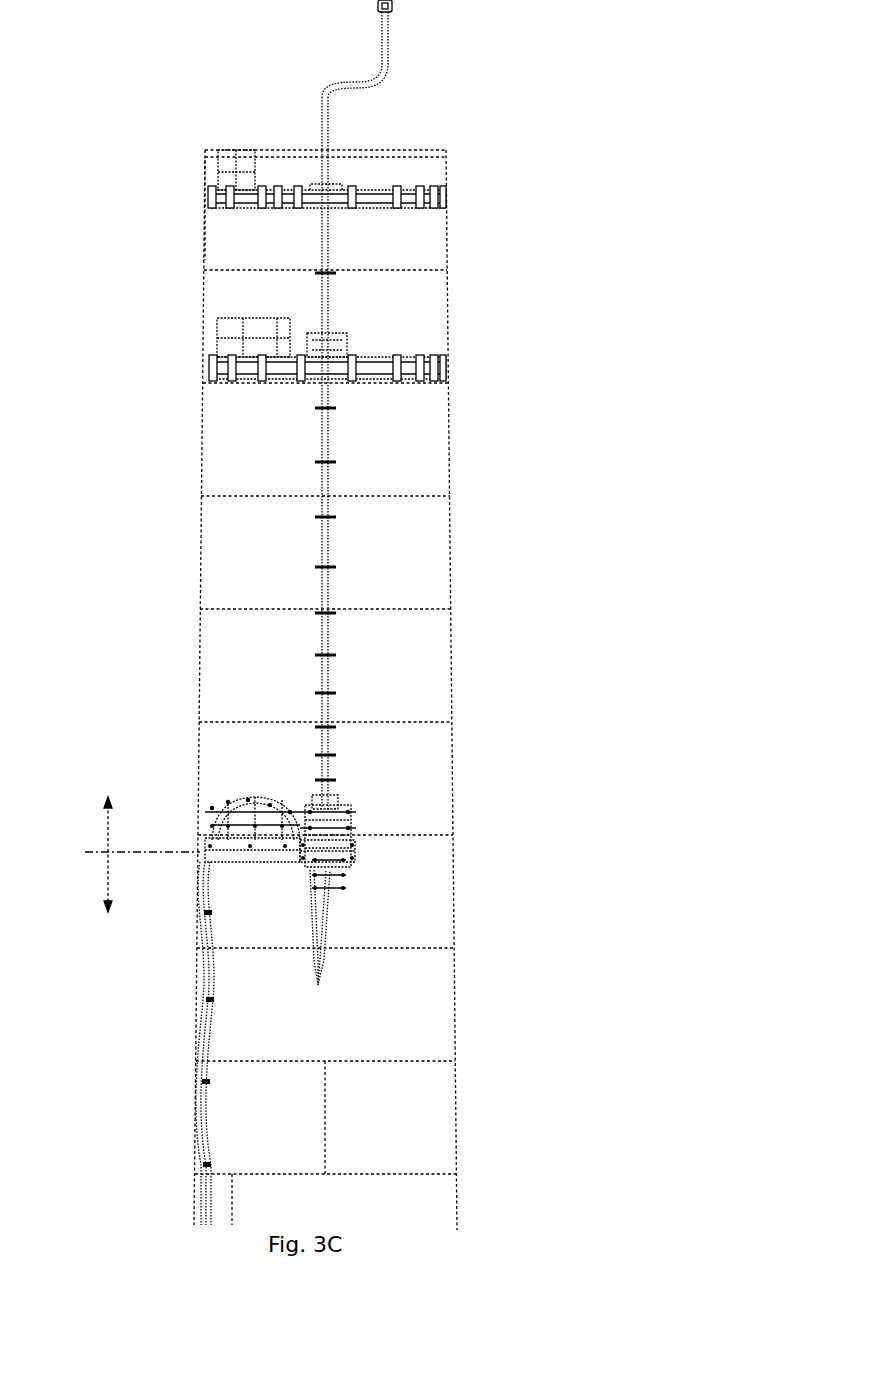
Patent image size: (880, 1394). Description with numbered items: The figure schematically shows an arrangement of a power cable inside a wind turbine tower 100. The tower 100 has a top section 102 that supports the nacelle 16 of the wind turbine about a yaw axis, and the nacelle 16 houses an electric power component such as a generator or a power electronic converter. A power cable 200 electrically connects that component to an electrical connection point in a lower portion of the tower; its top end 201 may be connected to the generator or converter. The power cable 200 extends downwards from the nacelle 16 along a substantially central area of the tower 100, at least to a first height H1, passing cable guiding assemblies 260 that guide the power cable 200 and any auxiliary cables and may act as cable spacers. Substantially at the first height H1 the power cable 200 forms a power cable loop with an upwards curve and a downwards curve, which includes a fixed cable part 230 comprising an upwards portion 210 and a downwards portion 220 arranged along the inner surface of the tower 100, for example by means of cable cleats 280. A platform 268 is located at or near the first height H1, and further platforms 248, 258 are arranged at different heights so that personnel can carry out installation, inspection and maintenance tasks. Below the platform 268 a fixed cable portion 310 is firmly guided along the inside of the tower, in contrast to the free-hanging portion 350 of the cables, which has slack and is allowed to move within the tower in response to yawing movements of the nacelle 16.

The nacelle 16 is at (430, 150).
The tower 100 is at (158, 313).
The top section 102 is at (205, 232).
The power cable 200 is at (325, 297).
The top end 201 is at (396, 1).
The platform 248 is at (450, 204).
The platform 258 is at (456, 372).
The cable guiding assemblies 260 is at (336, 517).
The upwards portion 210 is at (305, 820).
The downwards portion 220 is at (215, 808).
The fixed cable part 230 is at (226, 778).
The platform 268 is at (356, 854).
The cable cleats 280 is at (206, 990).
The fixed cable portion 310 is at (207, 1027).
The free-hanging portion 350 is at (87, 853).
The first height H1 is at (127, 851).